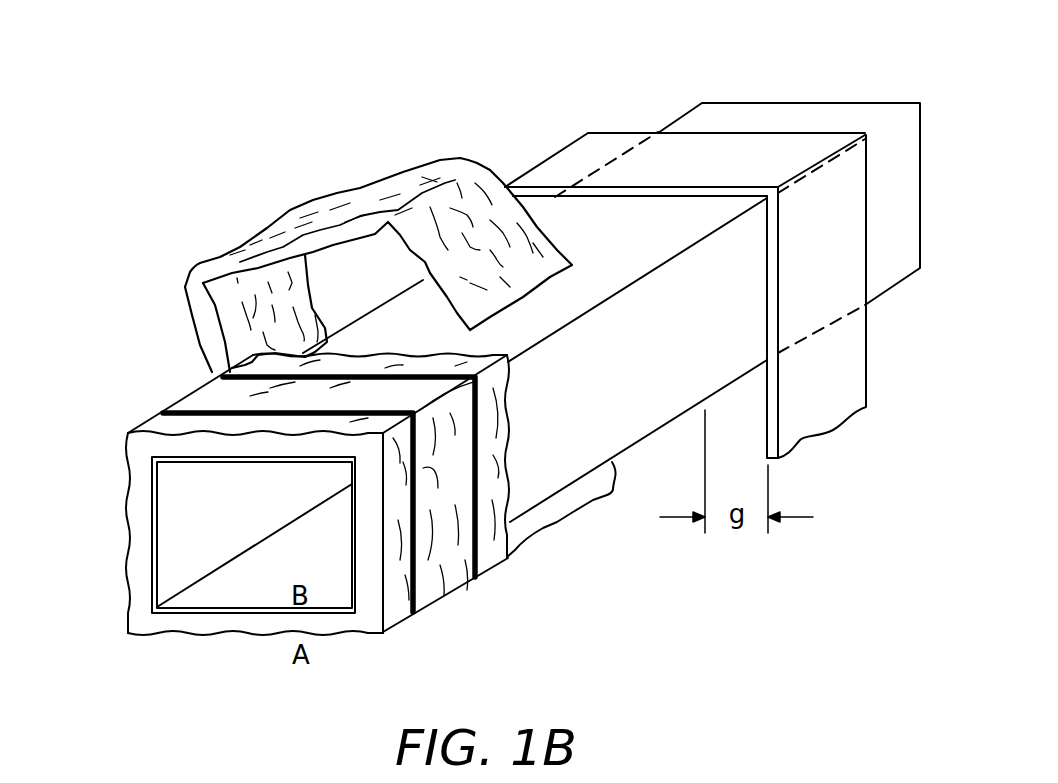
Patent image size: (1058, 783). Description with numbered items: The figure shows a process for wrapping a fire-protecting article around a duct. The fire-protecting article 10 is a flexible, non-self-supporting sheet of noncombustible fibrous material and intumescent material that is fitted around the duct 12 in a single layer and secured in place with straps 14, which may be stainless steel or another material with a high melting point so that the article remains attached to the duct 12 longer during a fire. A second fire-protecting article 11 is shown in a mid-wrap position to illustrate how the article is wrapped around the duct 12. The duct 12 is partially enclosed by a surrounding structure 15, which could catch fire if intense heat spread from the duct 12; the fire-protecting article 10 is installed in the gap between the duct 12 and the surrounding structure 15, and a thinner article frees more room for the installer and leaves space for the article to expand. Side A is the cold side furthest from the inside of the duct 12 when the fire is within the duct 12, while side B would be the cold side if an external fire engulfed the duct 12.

The fire-protecting article 10 is at (128, 546).
The fire-protecting article 11 is at (372, 184).
The duct 12 is at (748, 112).
The straps 14 is at (262, 374).
The surrounding structure 15 is at (852, 350).